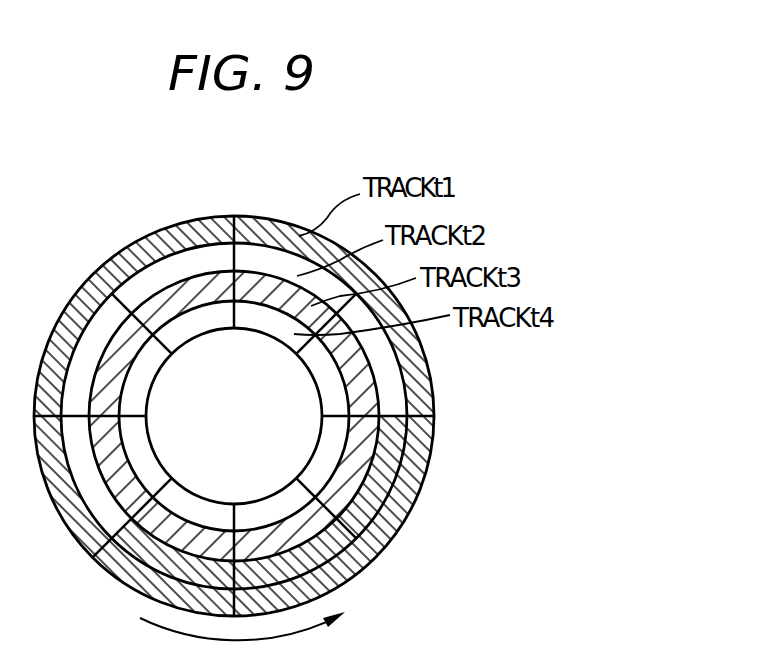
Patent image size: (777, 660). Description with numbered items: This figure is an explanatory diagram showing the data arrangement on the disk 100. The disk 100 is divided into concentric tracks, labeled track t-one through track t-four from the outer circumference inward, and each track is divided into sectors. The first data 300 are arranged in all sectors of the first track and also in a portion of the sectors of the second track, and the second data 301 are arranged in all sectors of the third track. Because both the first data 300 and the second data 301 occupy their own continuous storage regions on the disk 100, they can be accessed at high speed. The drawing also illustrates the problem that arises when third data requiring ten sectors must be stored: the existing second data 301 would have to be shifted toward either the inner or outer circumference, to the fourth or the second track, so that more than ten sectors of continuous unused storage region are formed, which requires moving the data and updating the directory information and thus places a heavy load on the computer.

The disk 100 is at (213, 348).
The first data 300 is at (370, 482).
The second data 301 is at (363, 387).